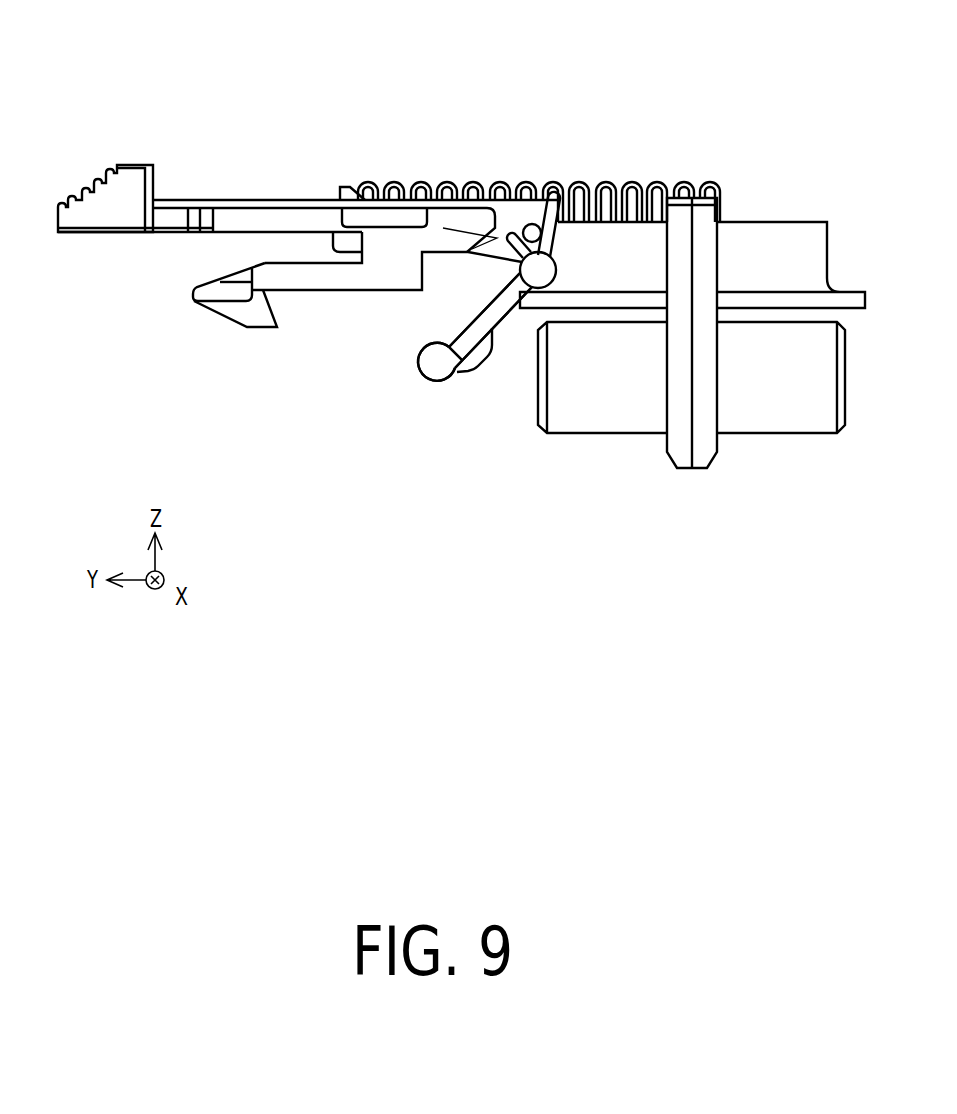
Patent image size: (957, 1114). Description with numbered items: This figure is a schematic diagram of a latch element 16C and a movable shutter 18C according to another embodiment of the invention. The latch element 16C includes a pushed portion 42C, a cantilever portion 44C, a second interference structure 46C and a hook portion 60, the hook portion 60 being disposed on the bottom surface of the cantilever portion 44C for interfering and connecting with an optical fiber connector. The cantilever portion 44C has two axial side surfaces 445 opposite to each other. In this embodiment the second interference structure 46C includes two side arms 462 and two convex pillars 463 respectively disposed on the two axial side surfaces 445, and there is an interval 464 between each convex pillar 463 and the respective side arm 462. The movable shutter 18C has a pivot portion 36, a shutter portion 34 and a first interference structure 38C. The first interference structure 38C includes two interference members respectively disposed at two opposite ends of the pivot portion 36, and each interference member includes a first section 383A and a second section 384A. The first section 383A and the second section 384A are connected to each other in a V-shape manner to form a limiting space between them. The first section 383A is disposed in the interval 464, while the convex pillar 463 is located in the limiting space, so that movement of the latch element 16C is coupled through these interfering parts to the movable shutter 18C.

The pushed portion 42C is at (100, 205).
The latch element 16C is at (212, 168).
The cantilever portion 44C is at (257, 198).
The axial side surfaces 445 is at (318, 205).
The second interference structure 46C is at (585, 70).
The side arms 462 is at (494, 212).
The convex pillars 463 is at (532, 224).
The interval 464 is at (492, 234).
The pivot portion 36 is at (530, 275).
The shutter portion 34 is at (470, 343).
The hook portion 60 is at (242, 313).
The movable shutter 18C is at (448, 408).
The first section 383A is at (535, 246).
The second section 384A is at (562, 228).
The first interference structure 38C is at (660, 558).